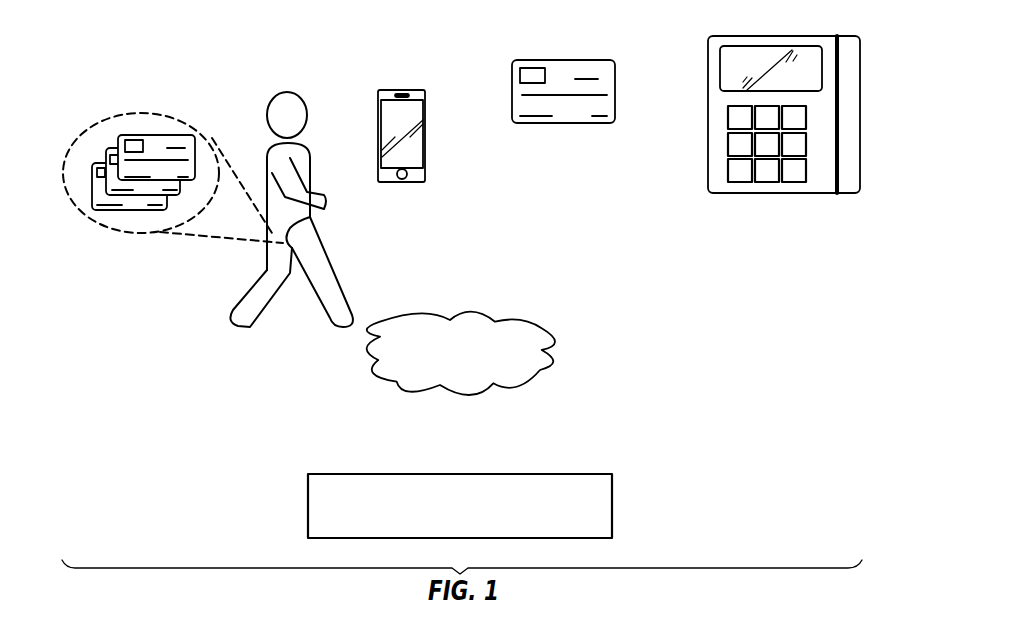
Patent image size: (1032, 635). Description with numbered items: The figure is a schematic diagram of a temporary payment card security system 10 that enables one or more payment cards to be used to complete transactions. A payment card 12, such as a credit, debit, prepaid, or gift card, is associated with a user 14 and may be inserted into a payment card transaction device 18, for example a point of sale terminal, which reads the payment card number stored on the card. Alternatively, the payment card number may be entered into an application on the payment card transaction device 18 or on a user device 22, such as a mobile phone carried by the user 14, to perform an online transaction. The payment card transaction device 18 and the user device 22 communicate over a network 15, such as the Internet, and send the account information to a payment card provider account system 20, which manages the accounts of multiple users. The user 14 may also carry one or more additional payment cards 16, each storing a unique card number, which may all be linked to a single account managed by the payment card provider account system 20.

The temporary payment card security system 10 is at (349, 39).
The payment card 12 is at (565, 58).
The user 14 is at (288, 90).
The network 15 is at (470, 312).
The additional payment cards 16 is at (145, 113).
The payment card transaction device 18 is at (783, 36).
The payment card provider account system 20 is at (457, 474).
The user device 22 is at (403, 83).